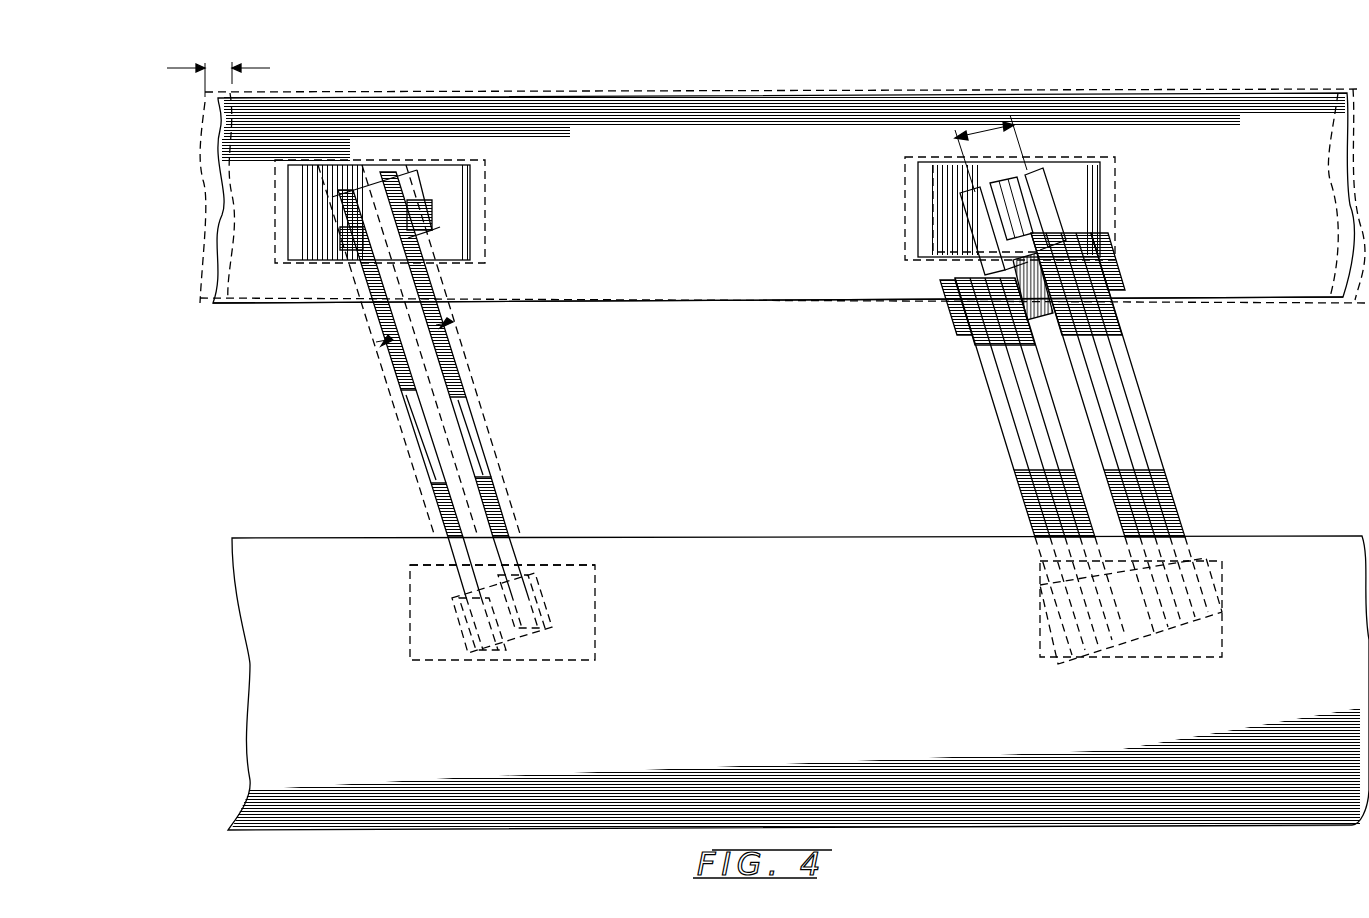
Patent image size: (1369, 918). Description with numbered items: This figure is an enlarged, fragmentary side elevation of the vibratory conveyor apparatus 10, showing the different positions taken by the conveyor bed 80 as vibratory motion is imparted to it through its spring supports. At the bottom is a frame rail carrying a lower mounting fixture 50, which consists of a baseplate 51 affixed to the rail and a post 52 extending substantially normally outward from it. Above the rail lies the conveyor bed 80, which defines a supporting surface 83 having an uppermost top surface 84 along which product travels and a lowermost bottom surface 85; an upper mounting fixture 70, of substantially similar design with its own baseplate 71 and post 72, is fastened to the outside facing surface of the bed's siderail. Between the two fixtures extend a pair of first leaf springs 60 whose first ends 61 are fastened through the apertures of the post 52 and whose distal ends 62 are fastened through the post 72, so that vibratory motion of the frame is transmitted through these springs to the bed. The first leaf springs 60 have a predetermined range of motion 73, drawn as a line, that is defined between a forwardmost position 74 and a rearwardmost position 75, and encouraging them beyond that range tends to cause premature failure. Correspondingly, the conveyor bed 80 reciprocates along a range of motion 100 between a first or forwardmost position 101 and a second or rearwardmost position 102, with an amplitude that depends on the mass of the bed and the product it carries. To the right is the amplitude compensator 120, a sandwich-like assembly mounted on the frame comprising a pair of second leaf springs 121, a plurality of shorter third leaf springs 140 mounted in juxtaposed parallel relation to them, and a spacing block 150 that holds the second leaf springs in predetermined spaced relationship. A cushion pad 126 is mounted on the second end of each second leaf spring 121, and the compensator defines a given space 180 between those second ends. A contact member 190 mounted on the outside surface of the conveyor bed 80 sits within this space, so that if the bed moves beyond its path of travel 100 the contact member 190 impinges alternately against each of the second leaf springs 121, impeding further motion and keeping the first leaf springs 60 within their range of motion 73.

The vibratory conveyor apparatus 10 is at (388, 855).
The lower mounting fixture 50 is at (572, 684).
The baseplate 51 is at (438, 643).
The post 52 is at (513, 643).
The first leaf springs 60 is at (477, 453).
The first ends 61 is at (453, 622).
The distal ends 62 is at (356, 212).
The upper mounting fixture 70 is at (313, 227).
The baseplate 71 is at (465, 230).
The post 72 is at (360, 175).
The range of motion 73 is at (420, 335).
The forwardmost position 74 is at (470, 375).
The rearwardmost position 75 is at (372, 330).
The conveyor bed 80 is at (1245, 65).
The supporting surface 83 is at (690, 288).
The top surface 84 is at (1260, 293).
The bottom surface 85 is at (770, 305).
The range of motion 100 is at (241, 77).
The forwardmost position 101 is at (440, 93).
The rearwardmost position 102 is at (197, 190).
The amplitude compensator 120 is at (955, 410).
The second leaf springs 121 is at (968, 208).
The cushion pad 126 is at (1037, 207).
The third leaf springs 140 is at (1018, 475).
The spacing block 150 is at (1030, 287).
The space 180 is at (985, 127).
The contact member 190 is at (1007, 213).